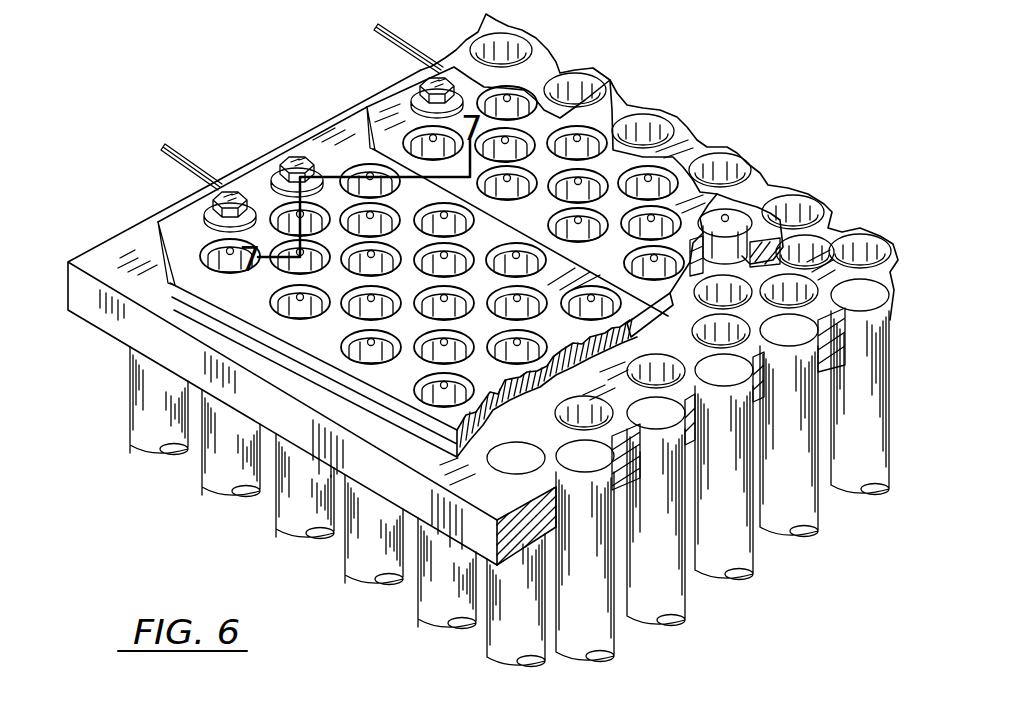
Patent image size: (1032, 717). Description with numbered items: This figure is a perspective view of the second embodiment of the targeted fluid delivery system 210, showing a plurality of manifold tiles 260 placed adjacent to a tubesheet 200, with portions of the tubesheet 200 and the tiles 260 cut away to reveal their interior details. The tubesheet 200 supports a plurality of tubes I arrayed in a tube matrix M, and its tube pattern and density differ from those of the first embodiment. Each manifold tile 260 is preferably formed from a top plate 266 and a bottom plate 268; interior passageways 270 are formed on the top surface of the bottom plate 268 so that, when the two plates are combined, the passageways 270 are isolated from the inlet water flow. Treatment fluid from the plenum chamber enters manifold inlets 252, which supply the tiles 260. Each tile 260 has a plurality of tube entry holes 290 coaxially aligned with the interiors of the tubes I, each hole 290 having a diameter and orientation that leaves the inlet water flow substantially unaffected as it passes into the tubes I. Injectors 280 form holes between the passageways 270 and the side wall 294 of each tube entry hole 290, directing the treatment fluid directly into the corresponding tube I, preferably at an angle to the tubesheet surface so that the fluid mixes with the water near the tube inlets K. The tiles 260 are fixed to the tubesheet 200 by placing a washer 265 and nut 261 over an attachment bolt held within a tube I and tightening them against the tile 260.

The tubesheet 200 is at (97, 326).
The targeted fluid delivery system 210 is at (568, 58).
The manifold inlet 252 is at (386, 32).
The manifold tile 260 is at (388, 97).
The nut 261 is at (291, 154).
The washer 265 is at (333, 160).
The top plate 266 is at (360, 541).
The bottom plate 268 is at (385, 250).
The interior passageway 270 is at (823, 229).
The injector 280 is at (684, 172).
The tube entry hole 290 is at (597, 130).
The side wall 294 is at (225, 260).
The tube I is at (202, 484).
The tube inlet K is at (487, 477).
The tube matrix M is at (731, 634).